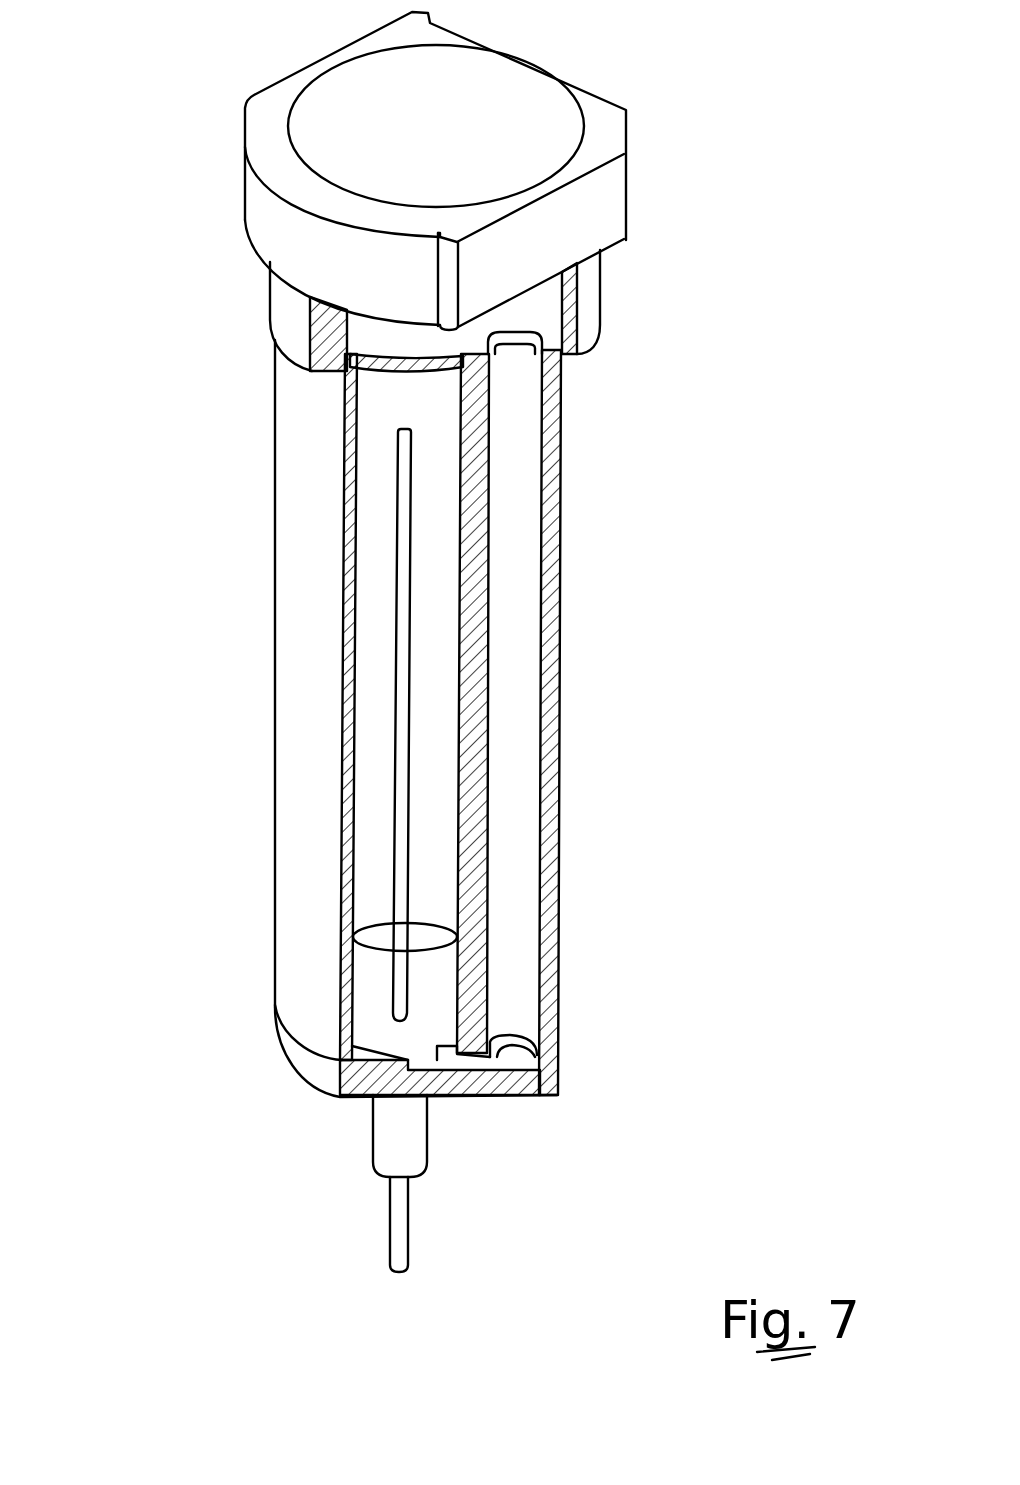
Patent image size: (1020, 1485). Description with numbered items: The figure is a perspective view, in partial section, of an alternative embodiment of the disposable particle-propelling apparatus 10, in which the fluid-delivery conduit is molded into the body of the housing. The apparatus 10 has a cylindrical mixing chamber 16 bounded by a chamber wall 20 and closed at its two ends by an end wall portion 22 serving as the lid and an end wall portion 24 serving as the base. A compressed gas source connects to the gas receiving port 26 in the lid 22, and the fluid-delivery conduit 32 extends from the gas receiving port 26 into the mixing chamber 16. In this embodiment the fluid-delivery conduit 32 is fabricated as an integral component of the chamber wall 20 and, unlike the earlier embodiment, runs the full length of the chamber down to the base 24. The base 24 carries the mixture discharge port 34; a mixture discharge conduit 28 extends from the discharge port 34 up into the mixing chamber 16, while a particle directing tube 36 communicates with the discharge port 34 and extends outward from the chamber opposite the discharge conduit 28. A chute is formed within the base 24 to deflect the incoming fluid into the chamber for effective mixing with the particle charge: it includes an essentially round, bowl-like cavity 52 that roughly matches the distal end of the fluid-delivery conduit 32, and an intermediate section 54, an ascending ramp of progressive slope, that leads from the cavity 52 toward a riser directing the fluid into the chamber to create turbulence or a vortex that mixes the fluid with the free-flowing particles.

The particle-propelling apparatus 10 is at (410, 647).
The mixing chamber 16 is at (401, 707).
The chamber wall 20 is at (547, 612).
The end wall portion (lid) 22 is at (435, 191).
The end wall portion (base) 24 is at (307, 1063).
The gas receiving port 26 is at (528, 340).
The mixture discharge conduit 28 is at (422, 527).
The fluid-delivery conduit 32 is at (501, 703).
The mixture discharge port 34 is at (408, 1128).
The particle directing tube 36 is at (403, 1233).
The bowl-like cavity 52 is at (520, 1103).
The intermediate section (ascending ramp) 54 is at (433, 1087).